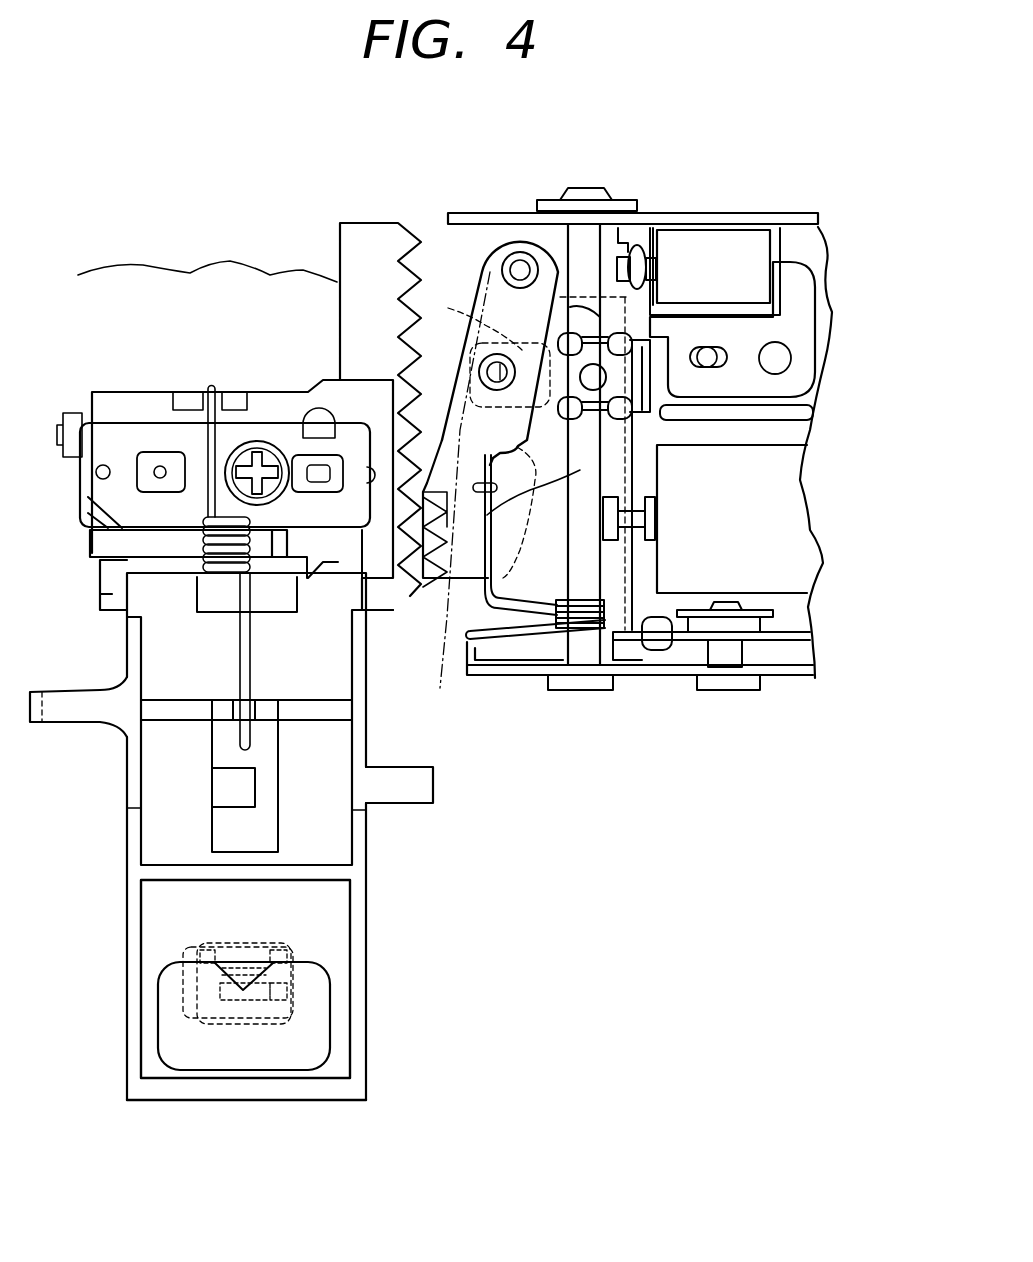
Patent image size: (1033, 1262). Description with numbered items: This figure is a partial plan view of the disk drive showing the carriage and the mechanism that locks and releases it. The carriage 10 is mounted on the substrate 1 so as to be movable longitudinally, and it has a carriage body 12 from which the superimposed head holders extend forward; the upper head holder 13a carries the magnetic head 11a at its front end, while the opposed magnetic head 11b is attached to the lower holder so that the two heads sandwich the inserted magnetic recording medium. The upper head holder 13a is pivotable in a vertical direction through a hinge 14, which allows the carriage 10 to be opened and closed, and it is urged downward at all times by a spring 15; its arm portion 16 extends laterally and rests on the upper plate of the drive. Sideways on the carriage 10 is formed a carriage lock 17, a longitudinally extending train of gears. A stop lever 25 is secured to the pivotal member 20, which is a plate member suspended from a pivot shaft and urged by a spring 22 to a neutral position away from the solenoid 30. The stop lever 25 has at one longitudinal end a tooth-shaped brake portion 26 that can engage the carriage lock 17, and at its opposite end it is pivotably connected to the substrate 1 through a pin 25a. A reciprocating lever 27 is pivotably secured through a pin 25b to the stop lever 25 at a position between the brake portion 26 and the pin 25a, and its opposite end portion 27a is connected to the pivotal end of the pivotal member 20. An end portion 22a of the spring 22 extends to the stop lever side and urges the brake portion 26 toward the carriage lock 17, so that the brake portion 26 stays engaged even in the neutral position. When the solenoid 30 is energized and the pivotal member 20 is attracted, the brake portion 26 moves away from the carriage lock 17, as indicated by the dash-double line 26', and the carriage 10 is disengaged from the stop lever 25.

The substrate 1 is at (452, 237).
The carriage 10 is at (122, 392).
The magnetic head 11a is at (293, 990).
The magnetic head 11b is at (295, 1003).
The carriage body 12 is at (255, 392).
The upper head holder 13a is at (365, 887).
The hinge 14 is at (280, 607).
The spring 15 is at (243, 642).
The arm portion 16 is at (425, 782).
The carriage lock 17 is at (370, 238).
The pivotal member 20 is at (637, 303).
The spring 22 is at (552, 617).
The end portion of the spring 22a is at (530, 490).
The stop lever 25 is at (493, 287).
The pin 25a is at (515, 255).
The pin 25b is at (490, 368).
The brake portion 26 is at (470, 566).
The brake portion in disengaged position 26' is at (457, 495).
The reciprocating lever 27 is at (489, 343).
The end portion of the reciprocating lever 27a is at (652, 368).
The solenoid 30 is at (803, 566).